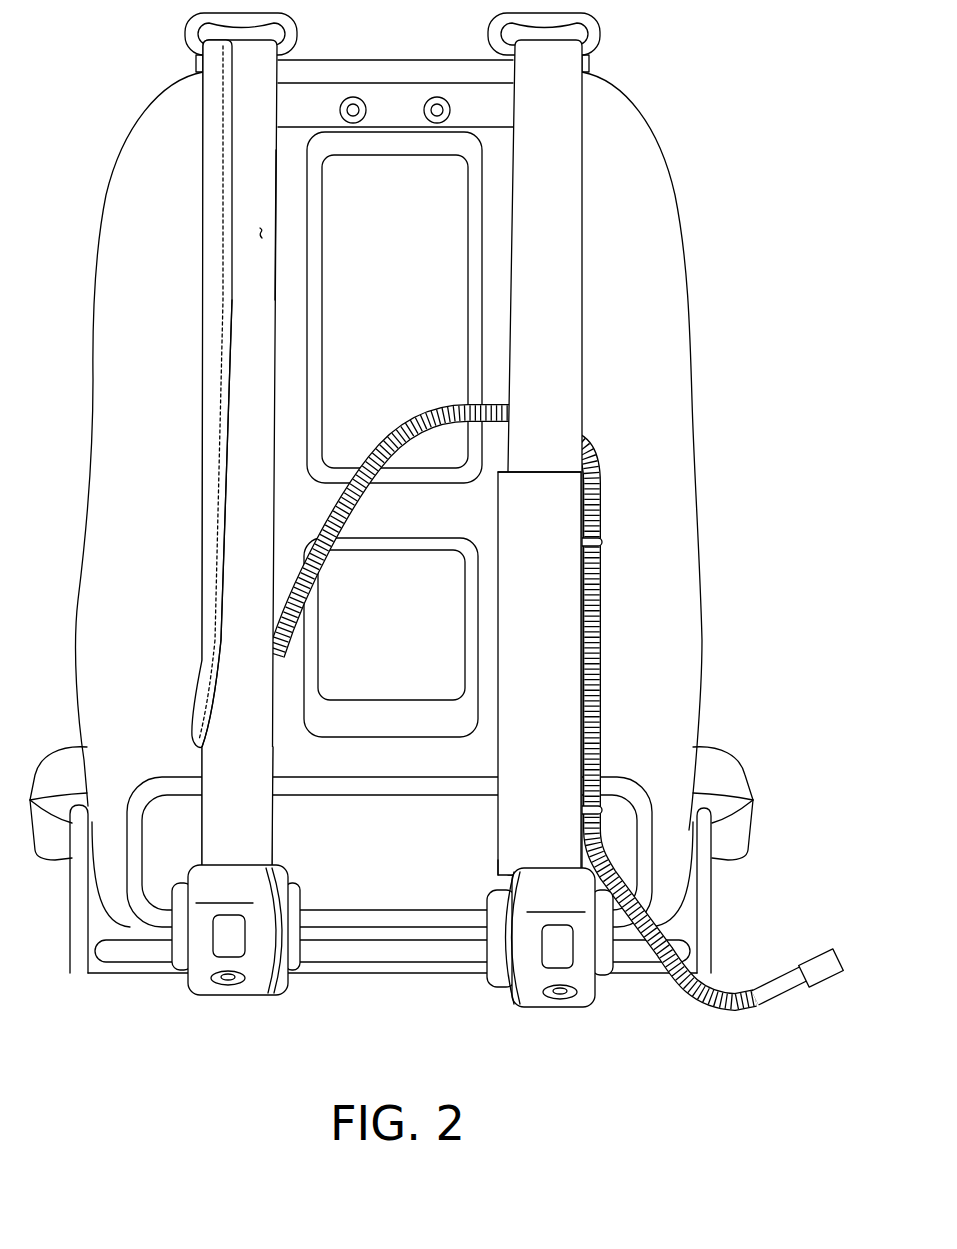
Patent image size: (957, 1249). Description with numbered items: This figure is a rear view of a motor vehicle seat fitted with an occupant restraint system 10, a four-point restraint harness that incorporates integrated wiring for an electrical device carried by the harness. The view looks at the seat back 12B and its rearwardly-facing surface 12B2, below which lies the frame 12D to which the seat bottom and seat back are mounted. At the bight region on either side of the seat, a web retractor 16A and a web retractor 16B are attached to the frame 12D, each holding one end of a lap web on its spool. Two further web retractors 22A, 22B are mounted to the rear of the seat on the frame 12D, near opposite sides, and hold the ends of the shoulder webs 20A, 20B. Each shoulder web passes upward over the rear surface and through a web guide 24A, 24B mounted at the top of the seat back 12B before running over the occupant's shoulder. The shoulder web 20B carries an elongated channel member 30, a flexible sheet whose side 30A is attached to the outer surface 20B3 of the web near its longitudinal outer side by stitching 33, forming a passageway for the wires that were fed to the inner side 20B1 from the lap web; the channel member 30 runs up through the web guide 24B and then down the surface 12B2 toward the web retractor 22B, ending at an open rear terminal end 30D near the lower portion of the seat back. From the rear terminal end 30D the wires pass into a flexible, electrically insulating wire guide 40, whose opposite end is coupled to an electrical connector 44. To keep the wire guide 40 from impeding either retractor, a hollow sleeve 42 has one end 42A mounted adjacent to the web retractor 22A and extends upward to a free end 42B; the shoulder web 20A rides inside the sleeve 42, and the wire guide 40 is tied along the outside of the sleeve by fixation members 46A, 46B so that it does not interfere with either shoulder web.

The occupant restraint system 10 is at (160, 496).
The seat back 12B is at (695, 315).
The rearwardly-facing surface 12B2 is at (418, 330).
The frame 12D is at (711, 903).
The web retractor 16A is at (700, 747).
The web retractor 16B is at (58, 746).
The shoulder web 20A is at (583, 216).
The shoulder web 20B is at (258, 153).
The inner side of shoulder web 20B1 is at (275, 195).
The outer surface of shoulder web 20B3 is at (265, 237).
The web retractor 22A is at (542, 1010).
The web retractor 22B is at (247, 997).
The web guide 24A is at (600, 40).
The web guide 24B is at (190, 40).
The elongated channel member 30 is at (202, 240).
The side of channel member 30A is at (230, 392).
The rear terminal end 30D is at (202, 748).
The stitching 33 is at (222, 296).
The wire guide 40 is at (364, 512).
The hollow sleeve 42 is at (522, 737).
The end of hollow sleeve 42A is at (503, 872).
The free end of hollow sleeve 42B is at (530, 470).
The electrical connector 44 is at (818, 958).
The fixation member 46A is at (602, 541).
The fixation member 46B is at (573, 810).